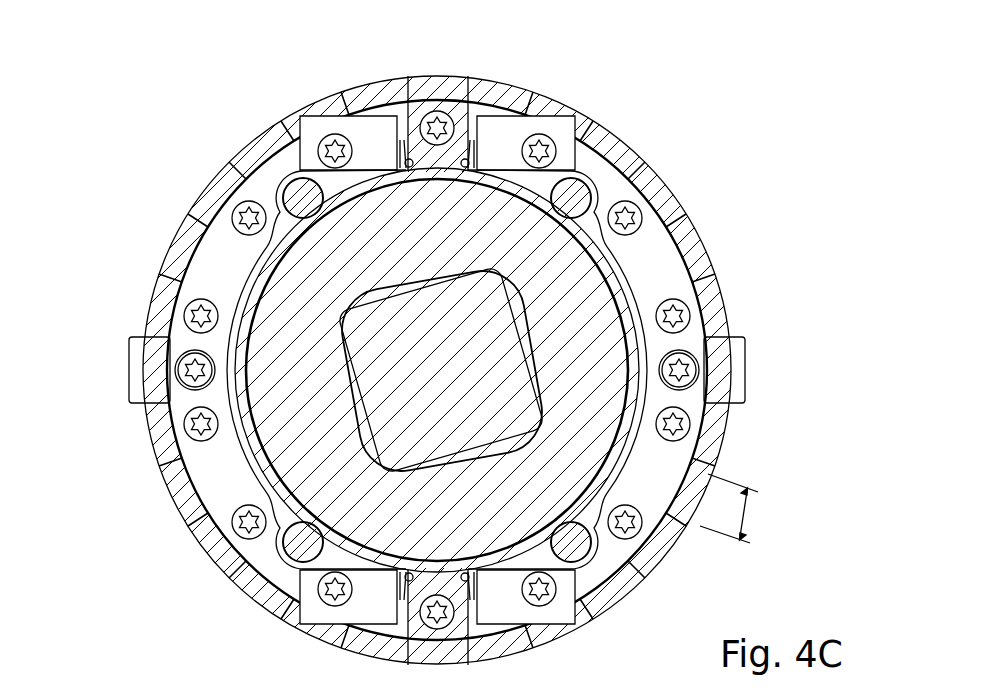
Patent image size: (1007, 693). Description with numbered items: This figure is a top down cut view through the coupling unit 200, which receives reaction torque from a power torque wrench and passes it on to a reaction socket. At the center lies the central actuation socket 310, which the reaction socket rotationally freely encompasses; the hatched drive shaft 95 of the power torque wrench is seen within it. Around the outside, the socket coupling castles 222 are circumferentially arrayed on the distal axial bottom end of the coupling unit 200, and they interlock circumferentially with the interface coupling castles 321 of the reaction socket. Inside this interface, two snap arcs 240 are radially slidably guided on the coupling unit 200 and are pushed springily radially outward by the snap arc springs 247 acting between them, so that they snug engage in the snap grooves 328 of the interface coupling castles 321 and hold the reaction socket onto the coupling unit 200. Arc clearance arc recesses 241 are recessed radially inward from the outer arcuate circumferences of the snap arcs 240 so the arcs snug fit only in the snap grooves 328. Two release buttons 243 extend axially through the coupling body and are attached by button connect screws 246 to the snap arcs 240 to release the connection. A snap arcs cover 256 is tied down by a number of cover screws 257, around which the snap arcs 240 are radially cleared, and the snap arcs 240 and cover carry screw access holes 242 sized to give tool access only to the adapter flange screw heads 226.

The coupling unit 200 is at (122, 143).
The snap arc springs 247 is at (470, 156).
The socket coupling castles 222 is at (612, 175).
The screw access holes 242 is at (641, 225).
The central actuation socket 310 is at (580, 290).
The interface coupling castles 321 is at (722, 318).
The snap grooves 328 is at (718, 325).
The release buttons 243 is at (134, 346).
The button connect screws 246 is at (179, 392).
The drive shaft 95 is at (528, 391).
The arc clearance arc recesses 241 is at (729, 508).
The snap arcs 240 is at (651, 518).
The cover screws 257 is at (586, 551).
The snap arcs cover 256 is at (538, 554).
The adapter flange screw heads 226 is at (322, 604).